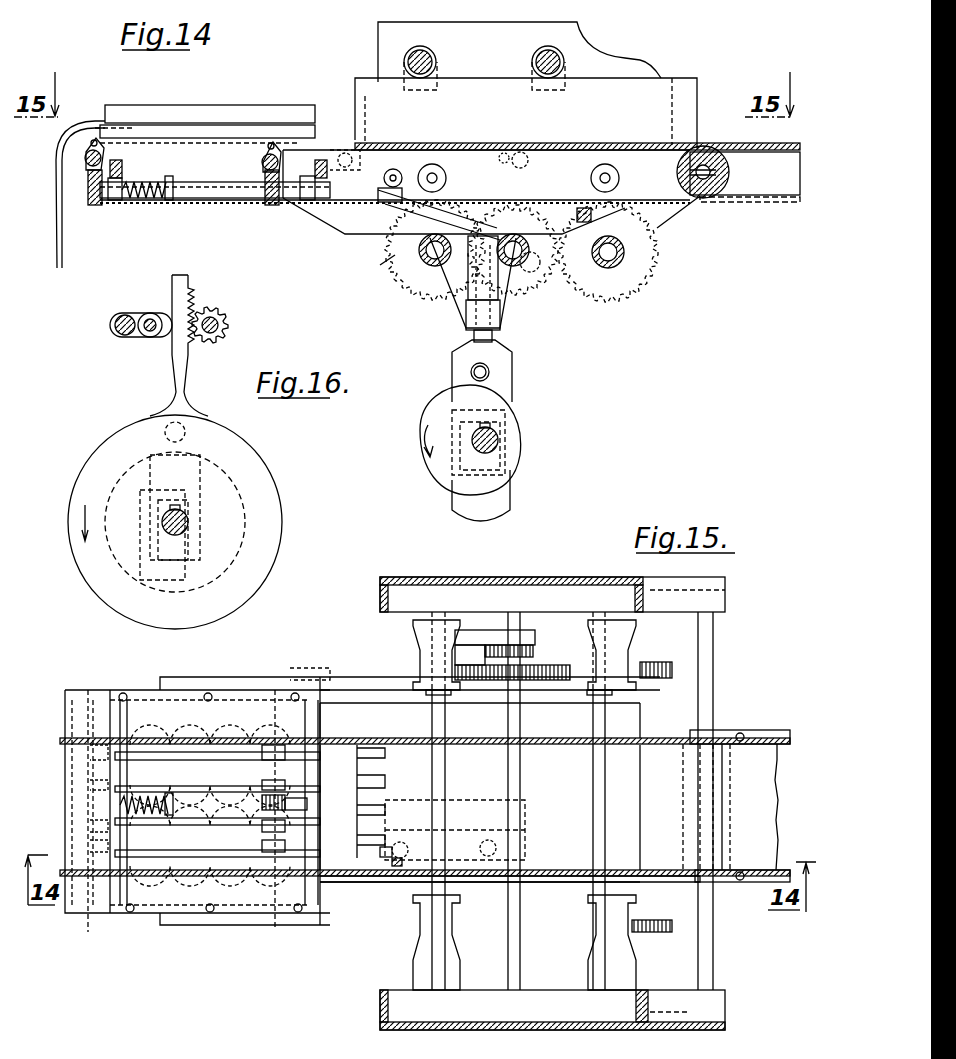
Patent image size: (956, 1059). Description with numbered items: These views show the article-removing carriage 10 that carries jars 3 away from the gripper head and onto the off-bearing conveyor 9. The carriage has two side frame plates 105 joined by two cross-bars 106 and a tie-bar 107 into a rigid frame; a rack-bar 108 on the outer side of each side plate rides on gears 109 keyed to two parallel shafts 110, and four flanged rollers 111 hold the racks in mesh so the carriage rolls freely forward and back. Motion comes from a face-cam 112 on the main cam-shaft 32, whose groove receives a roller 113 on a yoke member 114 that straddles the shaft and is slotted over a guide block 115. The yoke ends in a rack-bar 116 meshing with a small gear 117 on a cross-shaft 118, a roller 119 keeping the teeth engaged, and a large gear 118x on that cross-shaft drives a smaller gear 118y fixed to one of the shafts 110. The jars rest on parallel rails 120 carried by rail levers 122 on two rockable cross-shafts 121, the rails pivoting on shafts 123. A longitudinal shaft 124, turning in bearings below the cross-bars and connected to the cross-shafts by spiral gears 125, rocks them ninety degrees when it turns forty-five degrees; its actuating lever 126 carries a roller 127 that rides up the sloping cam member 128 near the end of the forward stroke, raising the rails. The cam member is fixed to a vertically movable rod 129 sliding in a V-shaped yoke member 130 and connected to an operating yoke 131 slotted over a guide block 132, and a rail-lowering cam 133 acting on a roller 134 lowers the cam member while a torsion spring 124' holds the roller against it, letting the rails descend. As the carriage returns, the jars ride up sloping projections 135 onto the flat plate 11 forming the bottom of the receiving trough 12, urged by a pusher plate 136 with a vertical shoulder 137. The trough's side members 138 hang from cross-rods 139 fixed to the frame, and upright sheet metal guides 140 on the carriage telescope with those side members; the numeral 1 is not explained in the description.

In FIG. 14, the housing 1 is at (616, 68).
In FIG. 15, the housing 1 is at (583, 580).
In FIG. 15, the jars 3 is at (188, 872).
In FIG. 14, the off-bearing conveyor 9 is at (788, 143).
In FIG. 15, the off-bearing conveyor 9 is at (765, 782).
In FIG. 14, the article-removing carriage 10 is at (324, 229).
In FIG. 15, the article-removing carriage 10 is at (338, 932).
In FIG. 14, the flat plate 11 is at (590, 143).
In FIG. 15, the flat plate 11 is at (640, 740).
In FIG. 14, the article receiving trough 12 is at (652, 74).
In FIG. 15, the article receiving trough 12 is at (660, 880).
In FIG. 14, the main cam-shaft 32 is at (498, 440).
In FIG. 16, the main cam-shaft 32 is at (190, 520).
In FIG. 14, the side frame plates 105 is at (352, 220).
In FIG. 15, the side frame plates 105 is at (360, 880).
In FIG. 14, the cross-bars 106 is at (345, 153).
In FIG. 15, the cross-bars 106 is at (360, 760).
In FIG. 14, the tie-bar 107 is at (583, 208).
In FIG. 15, the tie-bar 107 is at (590, 716).
In FIG. 14, the rack-bar 108 is at (555, 200).
In FIG. 15, the rack-bar 108 is at (222, 925).
In FIG. 14, the gears 109 is at (653, 268).
In FIG. 15, the gears 109 is at (660, 920).
In FIG. 14, the parallel shafts 110 is at (610, 240).
In FIG. 16, the parallel shafts 110 is at (118, 335).
In FIG. 15, the parallel shafts 110 is at (620, 725).
In FIG. 14, the flanged rollers 111 is at (620, 178).
In FIG. 15, the flanged rollers 111 is at (630, 672).
In FIG. 16, the face-cam 112 is at (282, 518).
In FIG. 16, the roller 113 is at (203, 416).
In FIG. 16, the yoke member 114 is at (156, 414).
In FIG. 16, the guide block 115 is at (175, 495).
In FIG. 16, the rack-bar 116 is at (172, 300).
In FIG. 15, the rack-bar 116 is at (485, 638).
In FIG. 14, the small gear 117 is at (537, 268).
In FIG. 16, the small gear 117 is at (222, 312).
In FIG. 15, the small gear 117 is at (536, 652).
In FIG. 14, the cross-shaft 118 is at (513, 236).
In FIG. 16, the cross-shaft 118 is at (226, 325).
In FIG. 15, the cross-shaft 118 is at (522, 890).
In FIG. 14, the large gear 118x is at (532, 300).
In FIG. 15, the large gear 118x is at (585, 662).
In FIG. 14, the smaller gear 118y is at (365, 265).
In FIG. 15, the smaller gear 118y is at (416, 665).
In FIG. 16, the roller 119 is at (158, 338).
In FIG. 15, the roller 119 is at (468, 645).
In FIG. 14, the rails 120 is at (242, 129).
In FIG. 15, the rails 120 is at (225, 835).
In FIG. 14, the cross-shafts 121 is at (263, 172).
In FIG. 15, the cross-shafts 121 is at (253, 925).
In FIG. 14, the rail levers 122 is at (281, 145).
In FIG. 14, the shafts 123 is at (272, 143).
In FIG. 14, the longitudinal shaft 124 is at (215, 209).
In FIG. 15, the longitudinal shaft 124 is at (322, 788).
In FIG. 14, the torsion spring 124' is at (147, 206).
In FIG. 15, the torsion spring 124' is at (94, 811).
In FIG. 14, the spiral gears 125 is at (315, 168).
In FIG. 15, the spiral gears 125 is at (362, 822).
In FIG. 15, the actuating lever 126 is at (445, 810).
In FIG. 14, the roller 127 is at (395, 168).
In FIG. 15, the roller 127 is at (396, 870).
In FIG. 14, the cam member 128 is at (448, 208).
In FIG. 15, the cam member 128 is at (455, 835).
In FIG. 14, the vertically movable rod 129 is at (472, 336).
In FIG. 15, the vertically movable rod 129 is at (520, 830).
In FIG. 14, the V-shaped yoke member 130 is at (462, 308).
In FIG. 14, the operating yoke 131 is at (512, 377).
In FIG. 14, the guide block 132 is at (520, 410).
In FIG. 14, the rail-lowering cam 133 is at (440, 465).
In FIG. 14, the roller 134 is at (470, 372).
In FIG. 14, the sloping projections 135 is at (355, 150).
In FIG. 15, the sloping projections 135 is at (378, 846).
In FIG. 14, the pusher plate 136 is at (60, 157).
In FIG. 15, the pusher plate 136 is at (68, 913).
In FIG. 14, the vertical shoulder 137 is at (126, 127).
In FIG. 15, the vertical shoulder 137 is at (92, 822).
In FIG. 14, the side members 138 is at (683, 78).
In FIG. 15, the side members 138 is at (641, 870).
In FIG. 14, the cross-rods 139 is at (535, 60).
In FIG. 14, the sheet metal guides 140 is at (196, 105).
In FIG. 15, the sheet metal guides 140 is at (228, 725).